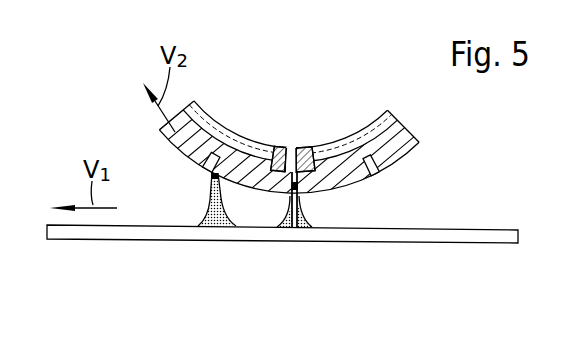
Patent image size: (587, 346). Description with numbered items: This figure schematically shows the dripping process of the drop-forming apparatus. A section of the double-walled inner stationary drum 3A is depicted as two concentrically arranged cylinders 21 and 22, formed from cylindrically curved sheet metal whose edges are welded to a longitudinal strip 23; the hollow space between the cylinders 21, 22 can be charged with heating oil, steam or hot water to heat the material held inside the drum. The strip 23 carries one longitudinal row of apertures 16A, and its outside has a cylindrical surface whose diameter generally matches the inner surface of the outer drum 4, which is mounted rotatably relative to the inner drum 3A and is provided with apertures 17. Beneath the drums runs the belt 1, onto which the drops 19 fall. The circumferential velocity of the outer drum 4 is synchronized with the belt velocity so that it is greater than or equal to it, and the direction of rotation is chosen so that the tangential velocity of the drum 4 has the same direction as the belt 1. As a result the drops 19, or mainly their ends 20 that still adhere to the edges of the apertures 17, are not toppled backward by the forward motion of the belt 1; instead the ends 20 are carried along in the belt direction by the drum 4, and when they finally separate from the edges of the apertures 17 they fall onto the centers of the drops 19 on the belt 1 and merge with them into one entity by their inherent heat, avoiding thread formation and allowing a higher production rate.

The belt 1 is at (412, 234).
The inner stationary drum 3A is at (350, 145).
The outer drum 4 is at (171, 134).
The apertures 16A is at (294, 147).
The apertures 17 is at (212, 166).
The drops 19 is at (213, 228).
The ends 20 is at (301, 188).
The cylinder 21 is at (205, 114).
The cylinder 22 is at (384, 112).
The longitudinal strip 23 is at (277, 149).